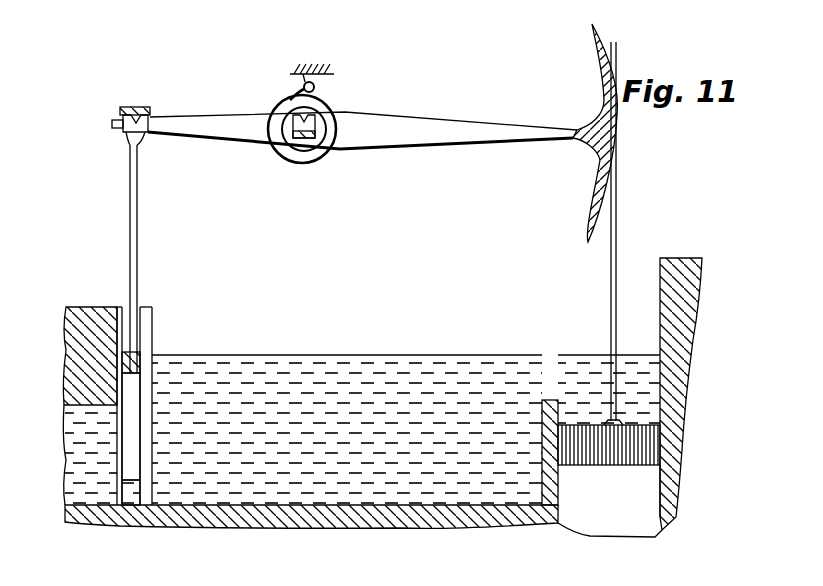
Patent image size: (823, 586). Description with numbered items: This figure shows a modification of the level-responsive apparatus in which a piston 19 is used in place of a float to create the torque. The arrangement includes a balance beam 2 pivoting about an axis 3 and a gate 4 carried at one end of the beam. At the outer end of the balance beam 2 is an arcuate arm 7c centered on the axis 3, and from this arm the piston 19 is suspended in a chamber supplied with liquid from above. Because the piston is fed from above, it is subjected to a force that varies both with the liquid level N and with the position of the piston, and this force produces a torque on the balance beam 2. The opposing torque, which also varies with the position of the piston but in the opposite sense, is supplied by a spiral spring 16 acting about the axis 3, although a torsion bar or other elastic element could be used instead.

The balance beam 2 is at (413, 123).
The axis 3 is at (313, 121).
The spiral spring 16 is at (322, 161).
The arcuate arm 7c is at (586, 148).
The gate 4 is at (135, 392).
The liquid level N is at (495, 355).
The piston 19 is at (630, 463).